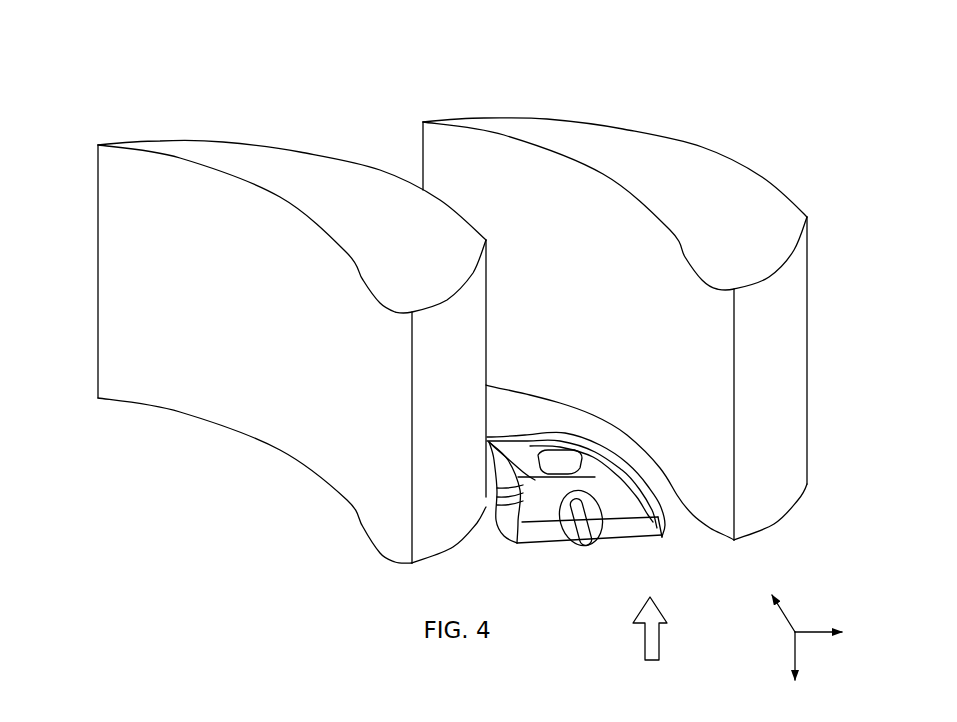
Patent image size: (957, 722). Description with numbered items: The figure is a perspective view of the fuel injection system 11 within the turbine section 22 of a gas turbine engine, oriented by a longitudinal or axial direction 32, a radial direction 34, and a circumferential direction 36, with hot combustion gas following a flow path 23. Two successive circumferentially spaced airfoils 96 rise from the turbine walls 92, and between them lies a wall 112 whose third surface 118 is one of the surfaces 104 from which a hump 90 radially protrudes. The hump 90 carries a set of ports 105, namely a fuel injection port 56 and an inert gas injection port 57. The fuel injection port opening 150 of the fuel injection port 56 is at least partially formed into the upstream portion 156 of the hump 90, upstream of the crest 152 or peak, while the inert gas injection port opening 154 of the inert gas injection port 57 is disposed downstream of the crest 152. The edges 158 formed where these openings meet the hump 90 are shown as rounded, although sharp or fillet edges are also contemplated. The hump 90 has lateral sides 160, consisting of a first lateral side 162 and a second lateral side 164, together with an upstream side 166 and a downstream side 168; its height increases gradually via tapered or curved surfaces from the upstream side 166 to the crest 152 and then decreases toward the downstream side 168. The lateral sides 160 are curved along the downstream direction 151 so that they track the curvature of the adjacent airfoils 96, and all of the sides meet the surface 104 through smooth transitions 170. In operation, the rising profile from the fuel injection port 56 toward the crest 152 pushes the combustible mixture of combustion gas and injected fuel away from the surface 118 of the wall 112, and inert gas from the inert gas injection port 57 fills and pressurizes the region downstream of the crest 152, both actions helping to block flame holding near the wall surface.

The fuel injection system 11 is at (232, 80).
The turbine section 22 is at (111, 99).
The flow path 23 is at (658, 638).
The longitudinal direction or axis 32 is at (787, 617).
The radial direction or axis 34 is at (795, 650).
The circumferential direction or axis 36 is at (814, 636).
The fuel injection port 56 is at (582, 547).
The inert gas injection port 57 is at (560, 468).
The hump 90 is at (623, 505).
The wall 92 is at (225, 142).
The successive circumferentially spaced airfoils 96 is at (185, 112).
The surface 104 is at (496, 410).
The set of ports 105 is at (615, 417).
The wall 112 is at (523, 400).
The third surface 118 is at (471, 574).
The fuel injection port opening 150 is at (565, 540).
The downstream direction 151 is at (783, 542).
The crest 152 is at (594, 470).
The inert gas injection port opening 154 is at (588, 425).
The upstream portion 156 is at (552, 511).
The edges 158 is at (603, 495).
The lateral sides 160 is at (695, 497).
The first lateral side 162 is at (493, 481).
The second lateral side 164 is at (659, 492).
The upstream side 166 is at (666, 513).
The downstream side 168 is at (519, 428).
The smooth transitions 170 is at (637, 552).